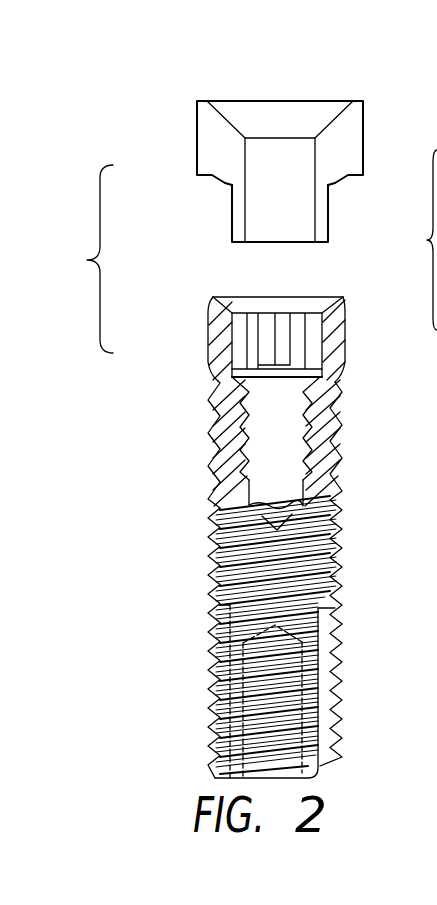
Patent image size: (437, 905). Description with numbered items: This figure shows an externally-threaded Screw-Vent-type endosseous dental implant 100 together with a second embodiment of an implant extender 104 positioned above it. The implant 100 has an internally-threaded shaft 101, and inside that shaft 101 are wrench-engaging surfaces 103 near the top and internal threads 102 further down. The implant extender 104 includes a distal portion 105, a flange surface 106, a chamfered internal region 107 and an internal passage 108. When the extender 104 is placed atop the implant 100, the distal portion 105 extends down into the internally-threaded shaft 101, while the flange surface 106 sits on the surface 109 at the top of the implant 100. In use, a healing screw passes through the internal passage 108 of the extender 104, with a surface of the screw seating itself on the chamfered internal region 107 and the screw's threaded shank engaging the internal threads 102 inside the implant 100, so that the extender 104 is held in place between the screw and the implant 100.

The externally-threaded endosseous dental implant 100 is at (355, 509).
The internally-threaded shaft 101 is at (296, 467).
The threads 102 is at (250, 418).
The wrench-engaging surfaces 103 is at (315, 325).
The implant extender 104 is at (322, 217).
The distal portion 105 is at (243, 228).
The flange surface 106 is at (207, 176).
The chamfered internal region 107 is at (313, 110).
The internal passage 108 is at (262, 160).
The surface 109 is at (213, 300).